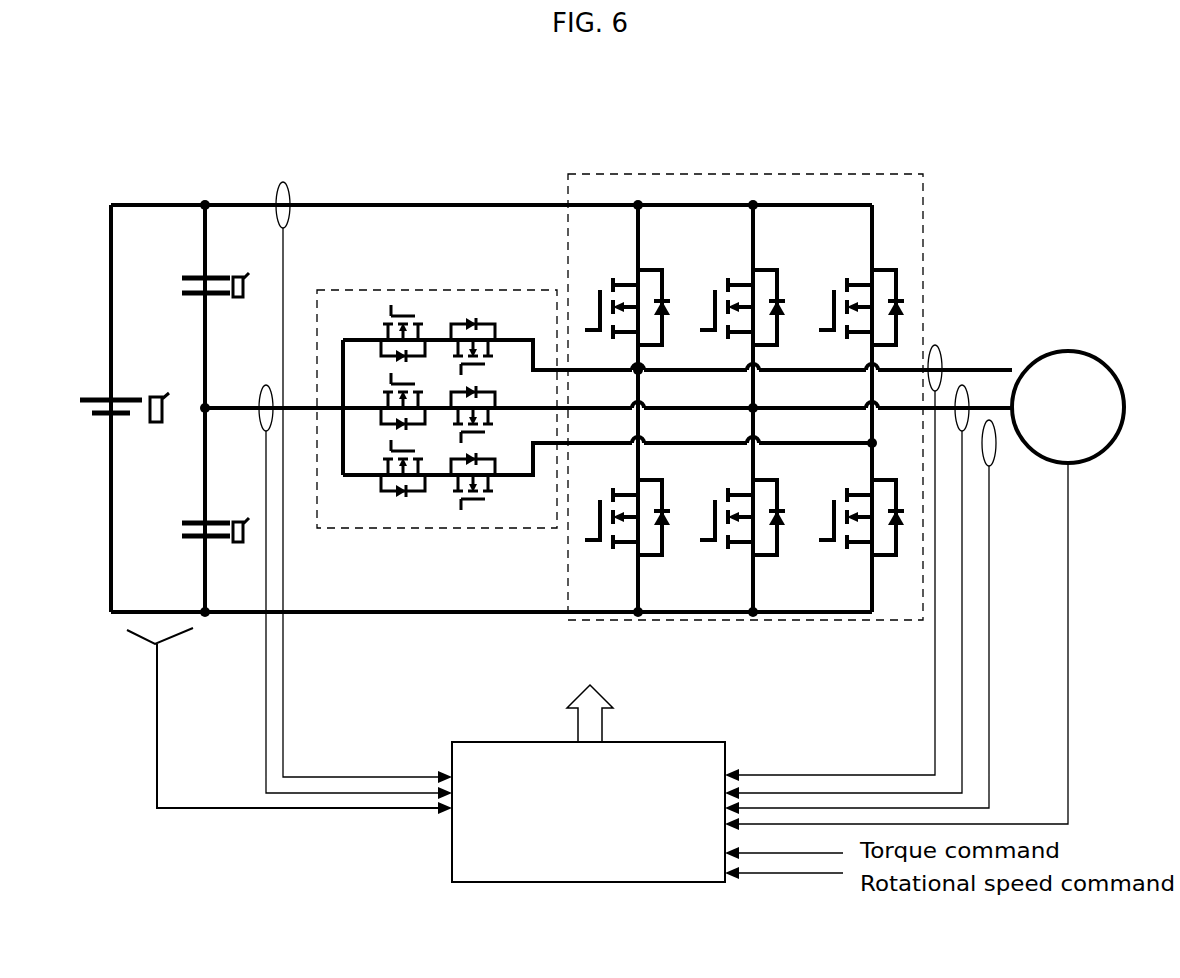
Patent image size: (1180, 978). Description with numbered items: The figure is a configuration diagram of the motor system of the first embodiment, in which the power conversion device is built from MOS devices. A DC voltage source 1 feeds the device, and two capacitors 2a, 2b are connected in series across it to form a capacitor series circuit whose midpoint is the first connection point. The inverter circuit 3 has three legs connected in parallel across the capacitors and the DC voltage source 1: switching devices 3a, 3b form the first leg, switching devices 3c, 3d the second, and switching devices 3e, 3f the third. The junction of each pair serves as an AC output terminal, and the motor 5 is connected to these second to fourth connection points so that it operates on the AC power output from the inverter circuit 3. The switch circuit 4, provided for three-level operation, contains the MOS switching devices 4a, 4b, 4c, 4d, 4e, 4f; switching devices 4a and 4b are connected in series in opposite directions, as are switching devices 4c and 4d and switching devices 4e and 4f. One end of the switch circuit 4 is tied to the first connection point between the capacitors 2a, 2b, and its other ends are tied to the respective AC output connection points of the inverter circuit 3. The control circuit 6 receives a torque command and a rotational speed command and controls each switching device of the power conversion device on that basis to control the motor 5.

The DC voltage source 1 is at (97, 362).
The capacitor 2a is at (235, 250).
The capacitor 2b is at (160, 515).
The inverter circuit 3 is at (735, 386).
The switching device 3a is at (620, 237).
The switching device 3b is at (655, 565).
The switching device 3c is at (740, 237).
The switching device 3d is at (765, 565).
The switching device 3e is at (862, 245).
The switching device 3f is at (855, 548).
The switch circuit 4 is at (405, 290).
The switching device 4a is at (370, 300).
The switching device 4b is at (478, 300).
The switching device 4c is at (383, 393).
The switching device 4d is at (513, 395).
The switching device 4e is at (378, 507).
The switching device 4f is at (470, 503).
The motor 5 is at (1110, 358).
The control circuit 6 is at (452, 832).